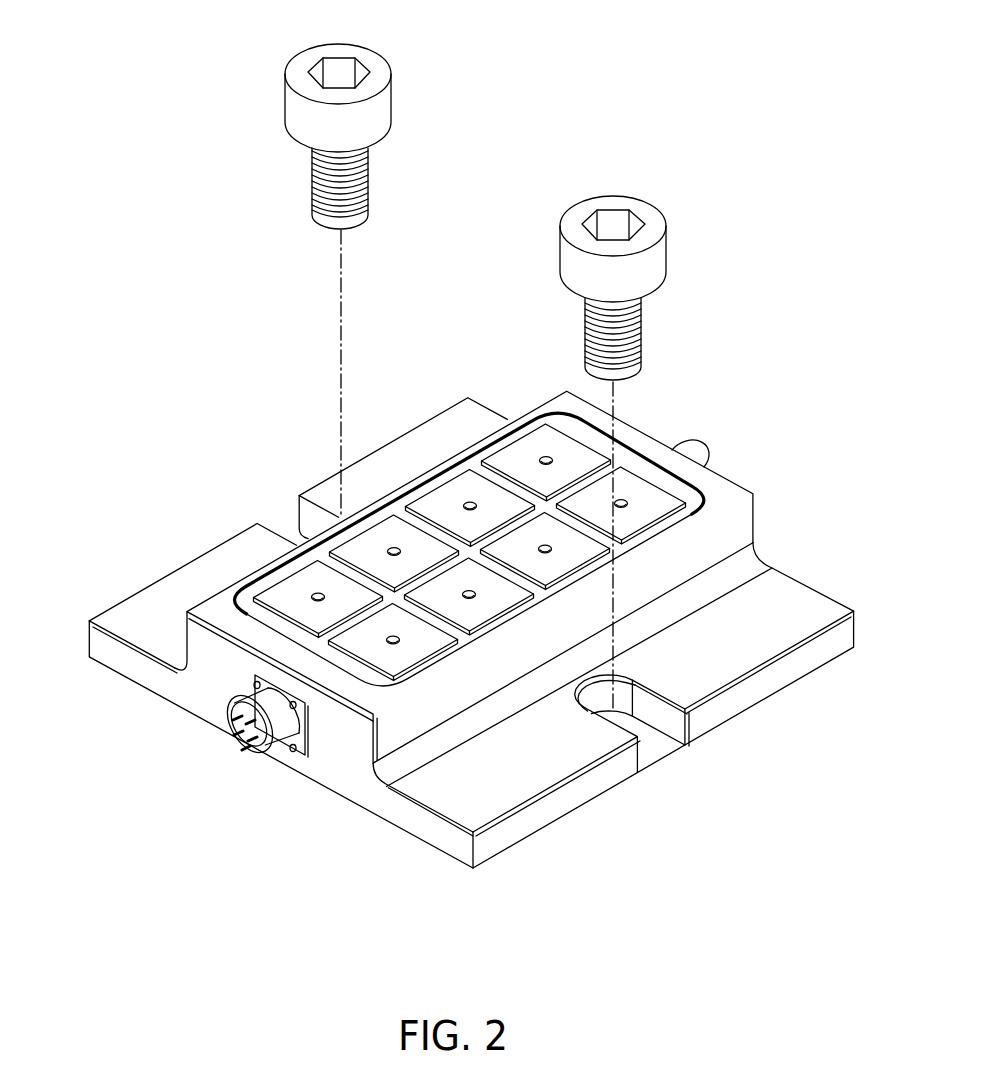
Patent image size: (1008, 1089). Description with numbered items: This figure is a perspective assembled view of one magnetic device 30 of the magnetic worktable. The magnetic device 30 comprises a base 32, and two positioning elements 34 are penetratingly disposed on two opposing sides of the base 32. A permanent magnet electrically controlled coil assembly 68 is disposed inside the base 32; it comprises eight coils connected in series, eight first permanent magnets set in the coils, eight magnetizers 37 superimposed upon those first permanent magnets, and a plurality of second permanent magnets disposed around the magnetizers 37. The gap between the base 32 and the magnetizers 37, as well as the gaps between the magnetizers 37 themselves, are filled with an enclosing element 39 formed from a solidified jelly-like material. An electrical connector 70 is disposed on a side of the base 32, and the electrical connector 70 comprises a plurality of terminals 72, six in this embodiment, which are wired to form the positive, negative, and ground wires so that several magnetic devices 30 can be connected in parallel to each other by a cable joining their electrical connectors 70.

The magnetic device 30 is at (556, 82).
The base 32 is at (310, 792).
The positioning element 34 is at (287, 102).
The magnetizer 37 is at (660, 503).
The enclosing element 39 is at (325, 553).
The permanent magnet electrically controlled coil assembly 68 is at (527, 446).
The electrical connector 70 is at (690, 446).
The terminal 72 is at (243, 737).